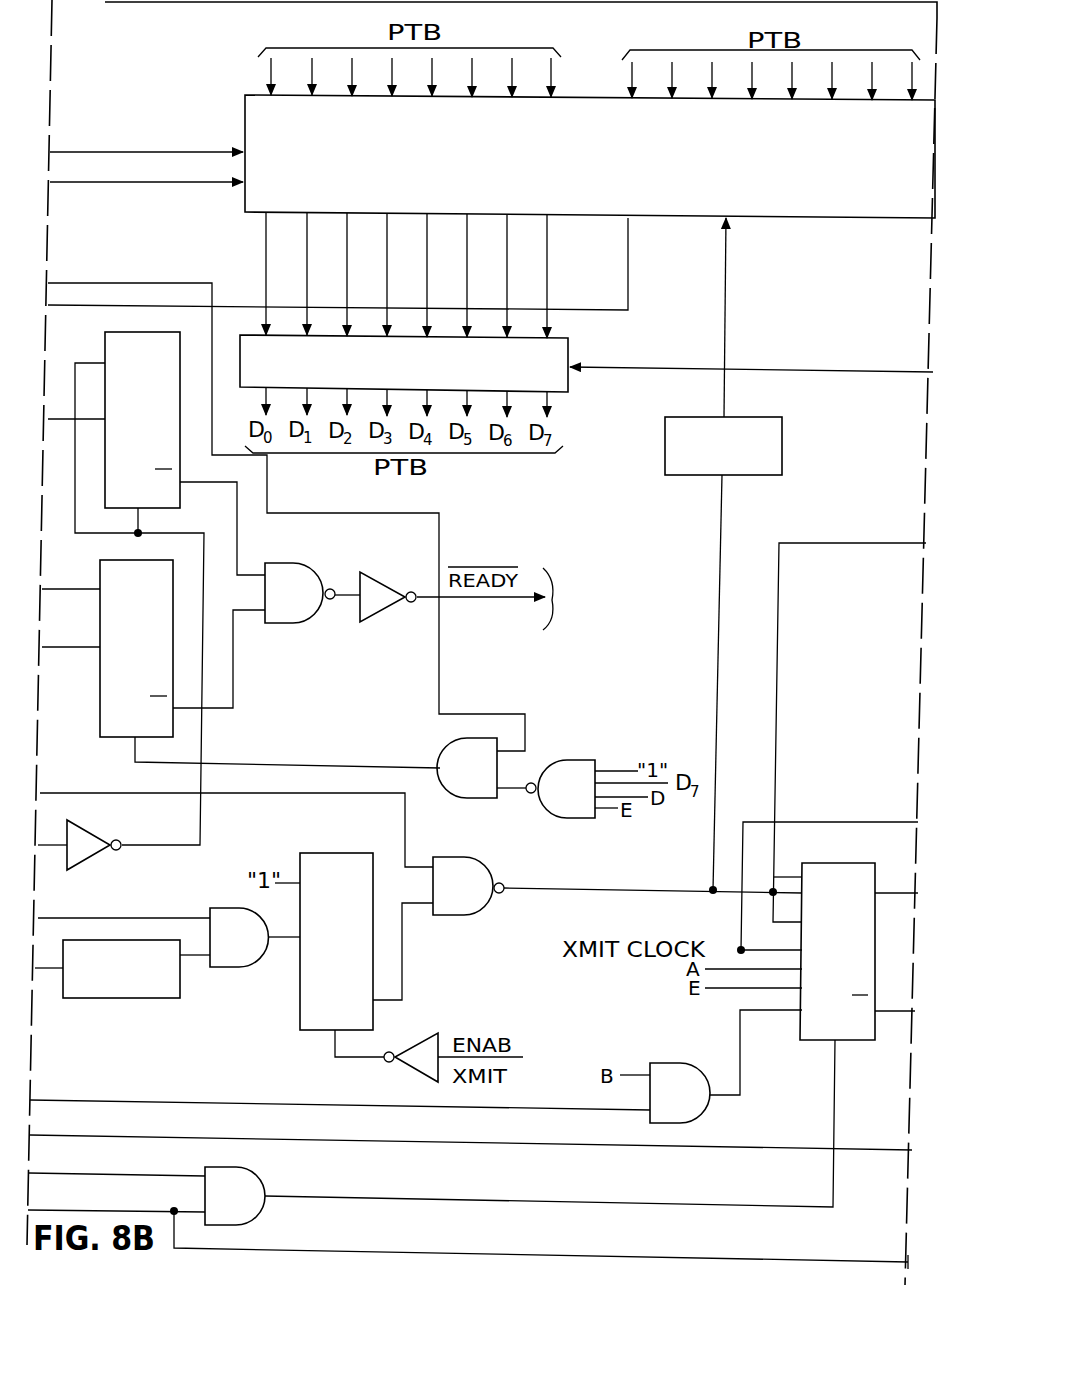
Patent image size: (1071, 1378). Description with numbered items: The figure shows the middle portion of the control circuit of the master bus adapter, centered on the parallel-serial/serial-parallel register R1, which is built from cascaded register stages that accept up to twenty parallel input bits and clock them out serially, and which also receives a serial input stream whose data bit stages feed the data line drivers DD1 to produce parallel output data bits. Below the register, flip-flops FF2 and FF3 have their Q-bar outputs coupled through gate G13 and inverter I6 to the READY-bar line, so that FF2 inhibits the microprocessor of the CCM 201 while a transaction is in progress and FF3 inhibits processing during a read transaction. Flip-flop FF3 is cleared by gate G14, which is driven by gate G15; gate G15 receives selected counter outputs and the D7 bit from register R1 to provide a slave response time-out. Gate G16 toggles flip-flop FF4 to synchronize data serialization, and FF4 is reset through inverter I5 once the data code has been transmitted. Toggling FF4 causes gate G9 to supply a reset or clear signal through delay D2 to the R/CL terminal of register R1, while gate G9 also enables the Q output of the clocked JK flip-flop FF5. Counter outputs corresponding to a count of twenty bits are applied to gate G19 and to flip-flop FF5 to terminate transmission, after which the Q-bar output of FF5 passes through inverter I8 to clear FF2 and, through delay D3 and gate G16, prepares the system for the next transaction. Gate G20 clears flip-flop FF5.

The parallel-serial/serial-parallel register R1 is at (833, 208).
The data line drivers DD1 is at (562, 352).
The delay D2 is at (782, 428).
The delay D3 is at (143, 990).
The inverter I6 is at (370, 576).
The inverter I8 is at (85, 840).
The inverter I5 is at (412, 1050).
The gate G13 is at (300, 593).
The gate G14 is at (467, 768).
The gate G15 is at (560, 789).
The gate G9 is at (468, 886).
The gate G16 is at (239, 937).
The gate G19 is at (680, 1093).
The gate G20 is at (235, 1196).
The flip-flop FF2 is at (142, 420).
The flip-flop FF3 is at (136, 648).
The flip-flop FF4 is at (336, 941).
The clocked JK flip-flop FF5 is at (837, 951).
The CCM 201 is at (613, 599).